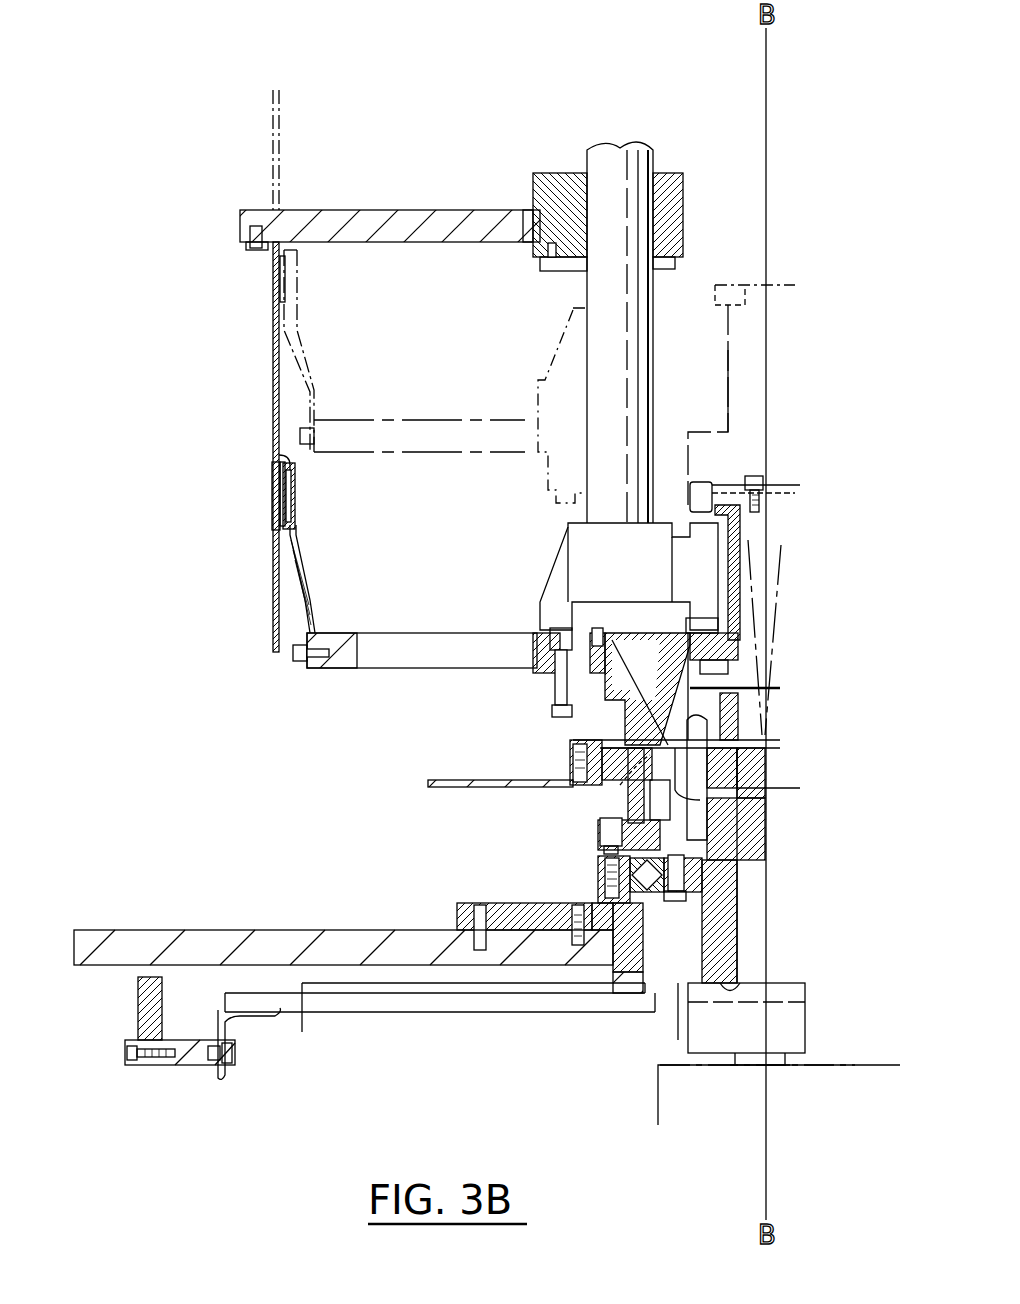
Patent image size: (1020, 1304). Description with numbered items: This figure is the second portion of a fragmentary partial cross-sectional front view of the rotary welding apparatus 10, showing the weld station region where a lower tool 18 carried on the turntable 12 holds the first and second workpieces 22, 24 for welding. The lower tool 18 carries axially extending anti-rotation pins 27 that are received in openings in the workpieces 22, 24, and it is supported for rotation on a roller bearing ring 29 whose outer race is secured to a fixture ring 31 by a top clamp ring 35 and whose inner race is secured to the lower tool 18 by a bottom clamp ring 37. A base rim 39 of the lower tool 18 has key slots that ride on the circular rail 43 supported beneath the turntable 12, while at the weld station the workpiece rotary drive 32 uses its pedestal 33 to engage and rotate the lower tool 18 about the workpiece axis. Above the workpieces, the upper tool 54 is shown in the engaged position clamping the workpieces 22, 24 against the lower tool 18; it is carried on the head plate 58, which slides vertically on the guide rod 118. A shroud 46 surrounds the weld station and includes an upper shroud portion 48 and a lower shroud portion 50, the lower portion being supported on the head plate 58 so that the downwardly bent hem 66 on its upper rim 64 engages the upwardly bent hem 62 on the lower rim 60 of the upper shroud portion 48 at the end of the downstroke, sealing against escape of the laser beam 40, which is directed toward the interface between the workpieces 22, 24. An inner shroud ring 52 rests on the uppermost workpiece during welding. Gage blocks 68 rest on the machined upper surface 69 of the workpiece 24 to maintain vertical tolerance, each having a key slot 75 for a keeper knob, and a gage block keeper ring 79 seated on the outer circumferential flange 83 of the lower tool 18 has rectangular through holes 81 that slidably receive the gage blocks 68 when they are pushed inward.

The rotary welding apparatus 10 is at (175, 320).
The turntable 12 is at (106, 932).
The lower tool 18 is at (590, 835).
The first workpiece 22 is at (635, 805).
The second workpiece 24 is at (745, 785).
The anti-rotation pin 27 is at (700, 795).
The roller bearing ring 29 is at (640, 890).
The fixture ring 31 is at (533, 905).
The workpiece rotary drive 32 is at (688, 1097).
The pedestal 33 is at (790, 1015).
The top clamp ring 35 is at (600, 870).
The bottom clamp ring 37 is at (662, 895).
The base rim 39 is at (742, 985).
The laser beam 40 is at (782, 562).
The circular rail 43 is at (140, 1005).
The shroud 46 is at (296, 596).
The upper shroud portion 48 is at (271, 410).
The lower shroud portion 50 is at (298, 300).
The inner shroud ring 52 is at (612, 672).
The upper tool 54 is at (738, 538).
The head plate 58 is at (366, 424).
The lower rim 60 is at (278, 526).
The upwardly bent hem 62 is at (300, 483).
The upper rim 64 is at (270, 460).
The downwardly bent hem 66 is at (274, 292).
The gage block 68 is at (690, 750).
The machined upper surface 69 is at (735, 765).
The key slot 75 is at (580, 760).
The gage block keeper ring 79 is at (690, 830).
The rectangular through hole 81 is at (625, 790).
The outer circumferential flange 83 is at (690, 852).
The guide rod 118 is at (597, 152).